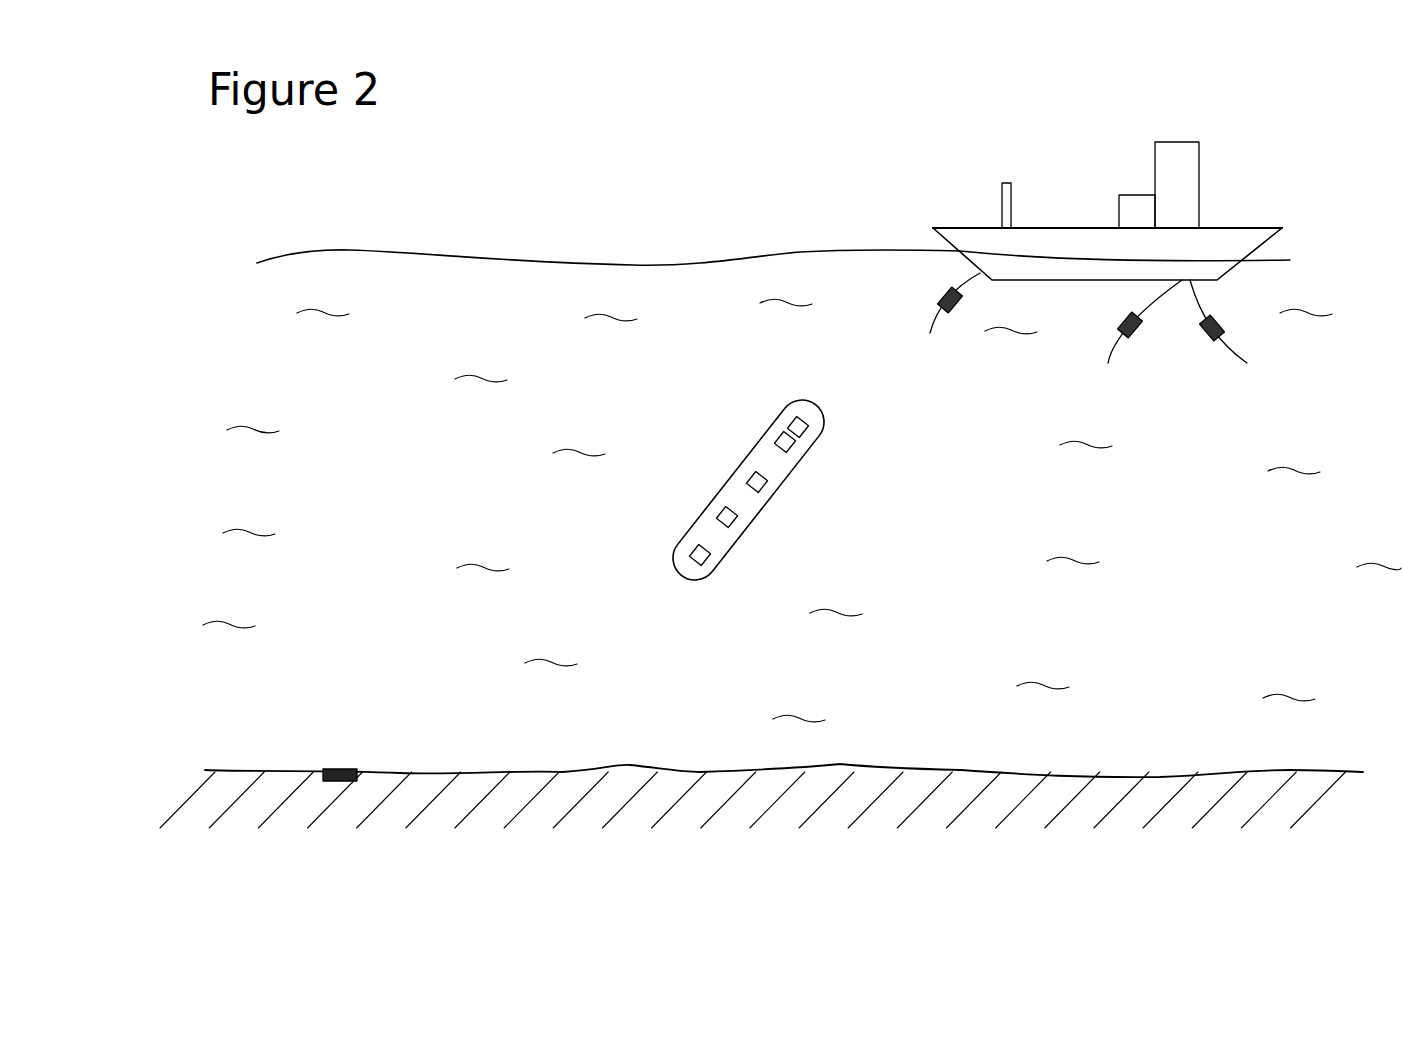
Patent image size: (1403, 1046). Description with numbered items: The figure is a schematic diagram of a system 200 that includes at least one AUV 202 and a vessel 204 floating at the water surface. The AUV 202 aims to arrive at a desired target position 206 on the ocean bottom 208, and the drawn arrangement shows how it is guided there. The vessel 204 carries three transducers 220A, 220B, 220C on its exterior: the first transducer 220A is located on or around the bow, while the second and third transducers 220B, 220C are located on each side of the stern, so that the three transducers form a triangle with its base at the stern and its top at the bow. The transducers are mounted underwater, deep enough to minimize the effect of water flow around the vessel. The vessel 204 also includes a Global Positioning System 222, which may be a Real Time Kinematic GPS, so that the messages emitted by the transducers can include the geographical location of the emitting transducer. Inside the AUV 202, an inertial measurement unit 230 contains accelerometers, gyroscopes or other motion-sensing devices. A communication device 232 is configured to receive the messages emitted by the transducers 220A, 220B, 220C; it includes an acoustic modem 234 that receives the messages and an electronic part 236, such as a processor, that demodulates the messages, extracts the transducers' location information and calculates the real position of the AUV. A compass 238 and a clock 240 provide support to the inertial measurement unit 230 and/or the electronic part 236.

The system 200 is at (767, 130).
The AUV 202 is at (769, 475).
The vessel 204 is at (1092, 164).
The target position 206 is at (337, 770).
The ocean bottom 208 is at (487, 770).
The first transducer 220A is at (934, 319).
The second transducer 220B is at (1122, 340).
The third transducer 220C is at (1253, 338).
The Global Positioning System 222 is at (1001, 190).
The inertial measurement unit 230 is at (765, 489).
The communication device 232 is at (819, 445).
The acoustic modem 234 is at (791, 424).
The electronic part 236 is at (779, 438).
The compass 238 is at (719, 513).
The clock 240 is at (694, 551).